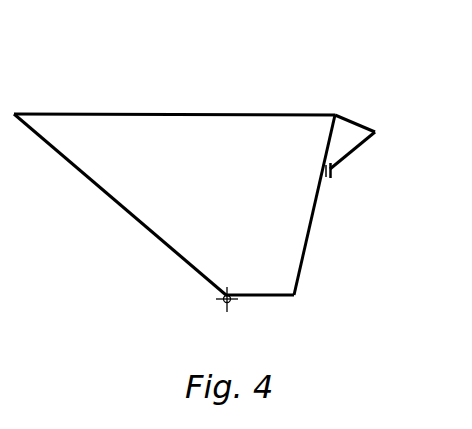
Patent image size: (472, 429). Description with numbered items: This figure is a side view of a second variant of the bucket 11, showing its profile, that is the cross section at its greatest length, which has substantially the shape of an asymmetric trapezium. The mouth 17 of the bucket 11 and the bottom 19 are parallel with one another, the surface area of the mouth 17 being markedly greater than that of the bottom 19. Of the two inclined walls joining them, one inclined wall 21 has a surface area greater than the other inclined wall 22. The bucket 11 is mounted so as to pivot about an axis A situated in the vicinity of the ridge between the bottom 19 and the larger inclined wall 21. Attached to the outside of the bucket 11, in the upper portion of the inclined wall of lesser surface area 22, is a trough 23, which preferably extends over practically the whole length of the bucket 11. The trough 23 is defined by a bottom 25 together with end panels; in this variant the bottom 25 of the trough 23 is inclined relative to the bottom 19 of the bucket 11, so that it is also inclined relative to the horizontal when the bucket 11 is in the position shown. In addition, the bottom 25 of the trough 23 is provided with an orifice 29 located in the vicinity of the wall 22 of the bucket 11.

The bucket 11 is at (220, 185).
The mouth 17 is at (196, 113).
The bottom 19 is at (268, 296).
The inclined wall 21 is at (101, 189).
The inclined wall of lesser surface area 22 is at (303, 259).
The trough 23 is at (378, 120).
The bottom of the trough 25 is at (353, 151).
The orifice 29 is at (335, 168).
The axis A is at (224, 302).